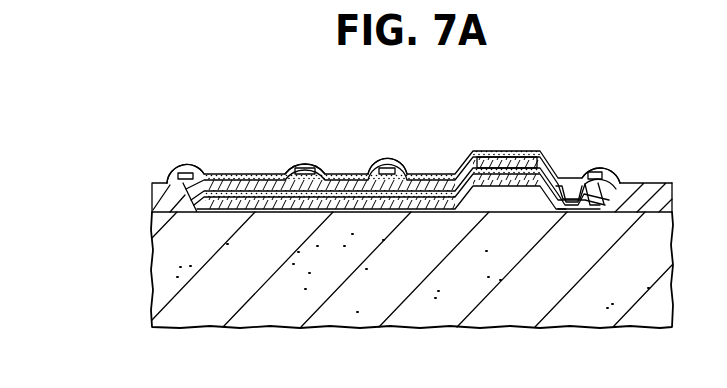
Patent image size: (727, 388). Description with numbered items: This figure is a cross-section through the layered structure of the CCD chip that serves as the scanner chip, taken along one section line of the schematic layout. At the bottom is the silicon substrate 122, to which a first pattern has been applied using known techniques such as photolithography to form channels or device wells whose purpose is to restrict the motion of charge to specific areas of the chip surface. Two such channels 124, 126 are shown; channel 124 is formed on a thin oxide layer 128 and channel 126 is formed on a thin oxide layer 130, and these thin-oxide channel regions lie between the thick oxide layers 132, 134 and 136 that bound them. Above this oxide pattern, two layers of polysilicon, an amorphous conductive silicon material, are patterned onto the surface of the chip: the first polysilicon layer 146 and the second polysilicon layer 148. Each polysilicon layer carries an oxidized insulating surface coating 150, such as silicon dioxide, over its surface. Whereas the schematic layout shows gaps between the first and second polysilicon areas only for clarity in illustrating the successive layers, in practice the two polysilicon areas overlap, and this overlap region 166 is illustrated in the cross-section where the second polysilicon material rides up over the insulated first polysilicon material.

The silicon substrate 122 is at (175, 266).
The channel 124 is at (296, 204).
The channel 126 is at (545, 206).
The thin oxide layer 128 is at (362, 205).
The thin oxide layer 130 is at (582, 206).
The thick oxide layer 132 is at (165, 197).
The thick oxide layer 134 is at (477, 204).
The thick oxide layer 136 is at (648, 192).
The poly 1 layer 146 is at (186, 171).
The poly 2 layer 148 is at (305, 168).
The insulating coating 150 is at (431, 173).
The overlap of poly 1 and poly 2 areas 166 is at (394, 167).